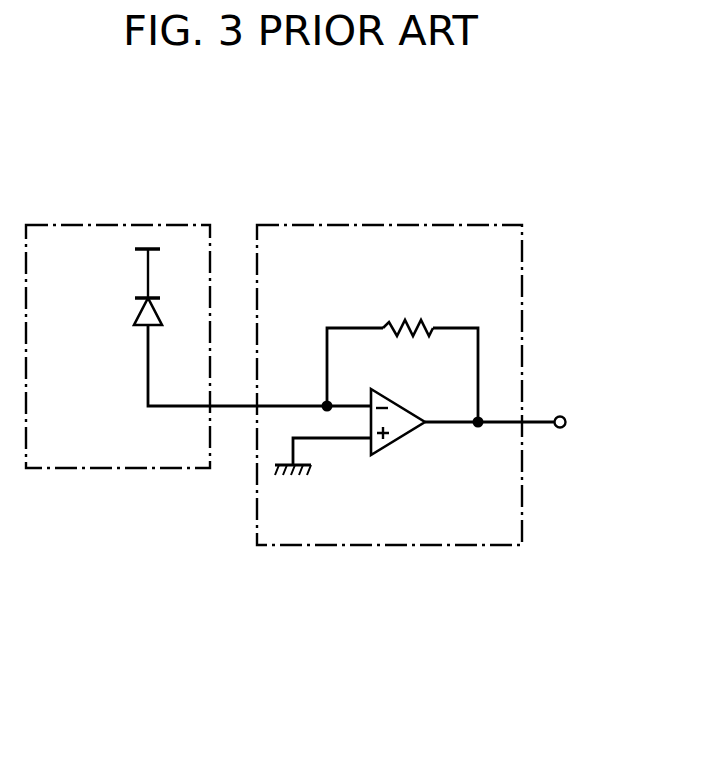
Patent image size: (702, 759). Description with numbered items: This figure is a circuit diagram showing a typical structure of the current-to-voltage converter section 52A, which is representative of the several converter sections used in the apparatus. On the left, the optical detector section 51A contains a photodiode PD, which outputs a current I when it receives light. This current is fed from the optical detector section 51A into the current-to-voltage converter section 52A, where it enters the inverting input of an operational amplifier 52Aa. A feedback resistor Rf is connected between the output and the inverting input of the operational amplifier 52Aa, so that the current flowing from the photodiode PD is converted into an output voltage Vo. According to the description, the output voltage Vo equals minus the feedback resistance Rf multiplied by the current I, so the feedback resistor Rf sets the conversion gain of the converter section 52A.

The optical detector section 51A is at (105, 224).
The element PD is at (108, 337).
The current-to-voltage converter section 52A is at (389, 223).
The operational amplifier 52Aa is at (400, 438).
The feedback resistor Rf is at (410, 325).
The output voltage Vo is at (518, 422).